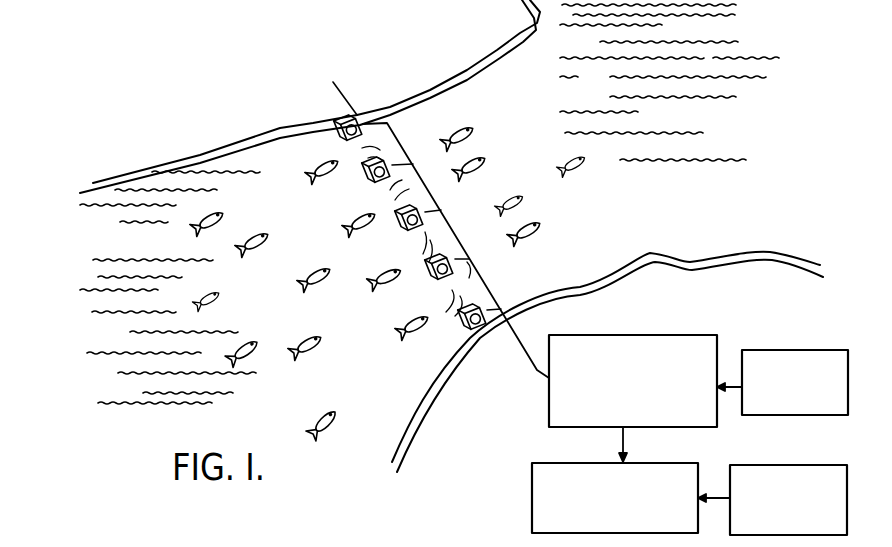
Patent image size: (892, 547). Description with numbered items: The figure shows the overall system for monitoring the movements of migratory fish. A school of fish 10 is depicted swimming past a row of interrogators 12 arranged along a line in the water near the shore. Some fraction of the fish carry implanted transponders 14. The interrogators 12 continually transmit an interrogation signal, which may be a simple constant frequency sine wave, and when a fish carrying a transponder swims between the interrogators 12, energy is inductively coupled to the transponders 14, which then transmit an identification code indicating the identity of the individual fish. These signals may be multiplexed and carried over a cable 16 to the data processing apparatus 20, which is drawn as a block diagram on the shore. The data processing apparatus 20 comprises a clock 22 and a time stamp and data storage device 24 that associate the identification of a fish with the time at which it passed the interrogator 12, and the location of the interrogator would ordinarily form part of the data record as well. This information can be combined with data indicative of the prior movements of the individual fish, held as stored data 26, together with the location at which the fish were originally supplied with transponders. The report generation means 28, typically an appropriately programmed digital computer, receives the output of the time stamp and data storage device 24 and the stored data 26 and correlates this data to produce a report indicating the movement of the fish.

The school of fish 10 is at (300, 353).
The interrogators 12 is at (363, 121).
The transponders 14 is at (398, 315).
The cable 16 is at (527, 340).
The data processing apparatus 20 is at (538, 440).
The clock 22 is at (773, 350).
The time stamp and data storage device 24 is at (647, 335).
The stored data 26 is at (787, 465).
The report generation means 28 is at (532, 497).